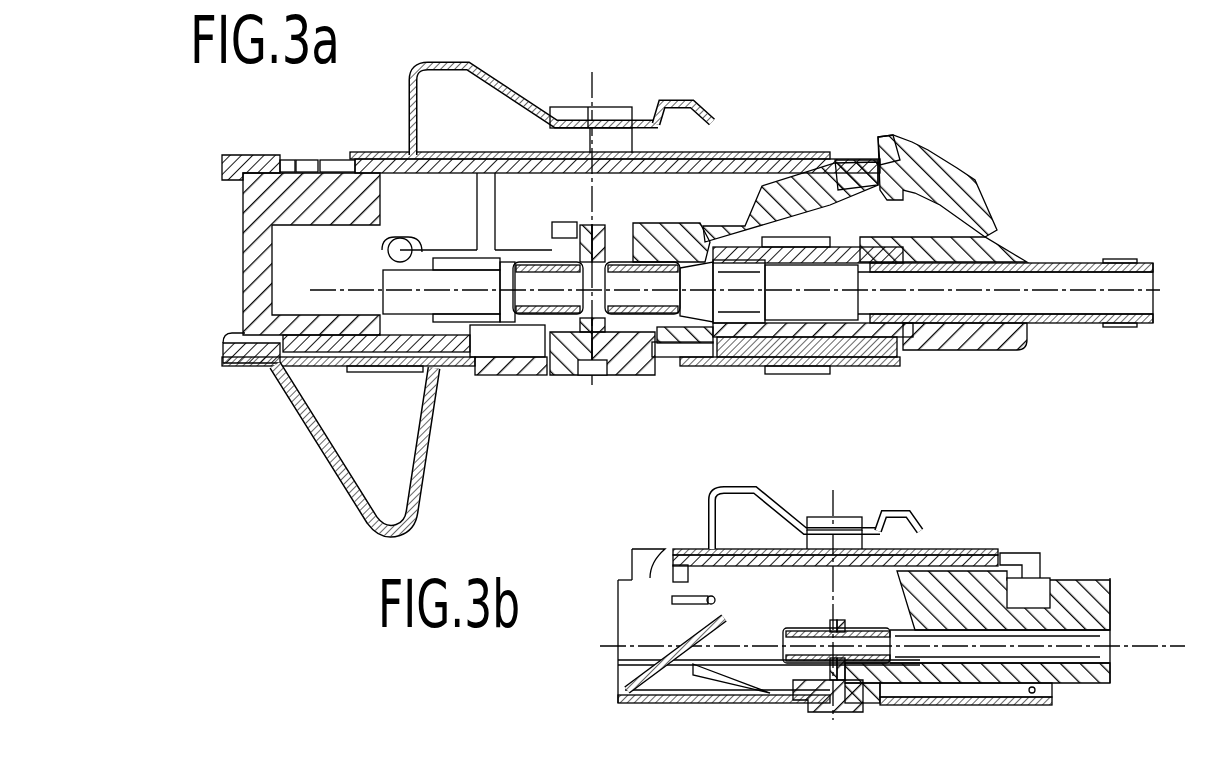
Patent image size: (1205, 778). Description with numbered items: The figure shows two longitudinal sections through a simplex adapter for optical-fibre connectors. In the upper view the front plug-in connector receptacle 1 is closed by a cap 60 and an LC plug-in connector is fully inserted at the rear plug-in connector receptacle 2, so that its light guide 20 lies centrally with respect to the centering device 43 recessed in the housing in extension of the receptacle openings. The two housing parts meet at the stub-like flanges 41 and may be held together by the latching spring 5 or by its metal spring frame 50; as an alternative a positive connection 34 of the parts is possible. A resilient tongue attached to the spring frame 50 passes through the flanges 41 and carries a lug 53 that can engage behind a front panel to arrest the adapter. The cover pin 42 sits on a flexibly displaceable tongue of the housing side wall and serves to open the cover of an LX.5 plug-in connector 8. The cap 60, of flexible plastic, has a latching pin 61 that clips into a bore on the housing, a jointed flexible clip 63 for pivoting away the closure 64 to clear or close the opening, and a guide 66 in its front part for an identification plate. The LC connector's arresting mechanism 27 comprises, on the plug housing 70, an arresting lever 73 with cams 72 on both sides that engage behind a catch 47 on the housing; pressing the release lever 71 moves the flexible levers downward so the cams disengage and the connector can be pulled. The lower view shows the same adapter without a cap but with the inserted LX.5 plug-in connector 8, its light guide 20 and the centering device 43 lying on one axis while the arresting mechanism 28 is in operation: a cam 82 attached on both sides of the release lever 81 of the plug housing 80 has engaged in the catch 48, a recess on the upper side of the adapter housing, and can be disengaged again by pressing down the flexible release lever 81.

In FIG. 3A, the plug-in connector receptacle 1 is at (205, 273).
In FIG. 3B, the plug-in connector receptacle 1 is at (603, 609).
In FIG. 3A, the plug-in connector receptacle 2 is at (998, 173).
In FIG. 3B, the plug-in connector receptacle 2 is at (1126, 625).
In FIG. 3A, the latching spring 5 is at (489, 56).
In FIG. 3B, the latching spring 5 is at (758, 483).
In FIG. 3B, the LX.5 plug-in connector 8 is at (1105, 553).
In FIG. 3A, the light guide 20 is at (737, 368).
In FIG. 3B, the light guide 20 is at (930, 660).
In FIG. 3A, the arresting mechanism 27 is at (908, 110).
In FIG. 3B, the arresting mechanism 28 is at (1000, 530).
In FIG. 3B, the positive connection 34 is at (833, 706).
In FIG. 3A, the flange 41 is at (615, 108).
In FIG. 3B, the flange 41 is at (847, 522).
In FIG. 3A, the cover pin 42 is at (398, 247).
In FIG. 3B, the cover pin 42 is at (716, 600).
In FIG. 3A, the centering device 43 is at (643, 372).
In FIG. 3B, the centering device 43 is at (812, 648).
In FIG. 3B, the catch 47 is at (686, 552).
In FIG. 3B, the catch 48 is at (653, 563).
In FIG. 3A, the spring frame 50 is at (737, 155).
In FIG. 3A, the lug 53 is at (673, 110).
In FIG. 3B, the lug 53 is at (897, 515).
In FIG. 3A, the cap 60 is at (247, 217).
In FIG. 3A, the latching pin 61 is at (533, 375).
In FIG. 3A, the jointed flexible clip 63 is at (302, 430).
In FIG. 3A, the closure 64 is at (252, 163).
In FIG. 3A, the guide 66 is at (230, 333).
In FIG. 3A, the plug housing 70 is at (1012, 247).
In FIG. 3A, the release lever 71 is at (937, 163).
In FIG. 3A, the cam 72 is at (803, 170).
In FIG. 3A, the arresting lever 73 is at (850, 177).
In FIG. 3B, the plug housing 80 is at (1092, 675).
In FIG. 3B, the release lever 81 is at (1098, 605).
In FIG. 3B, the cam 82 is at (1020, 570).